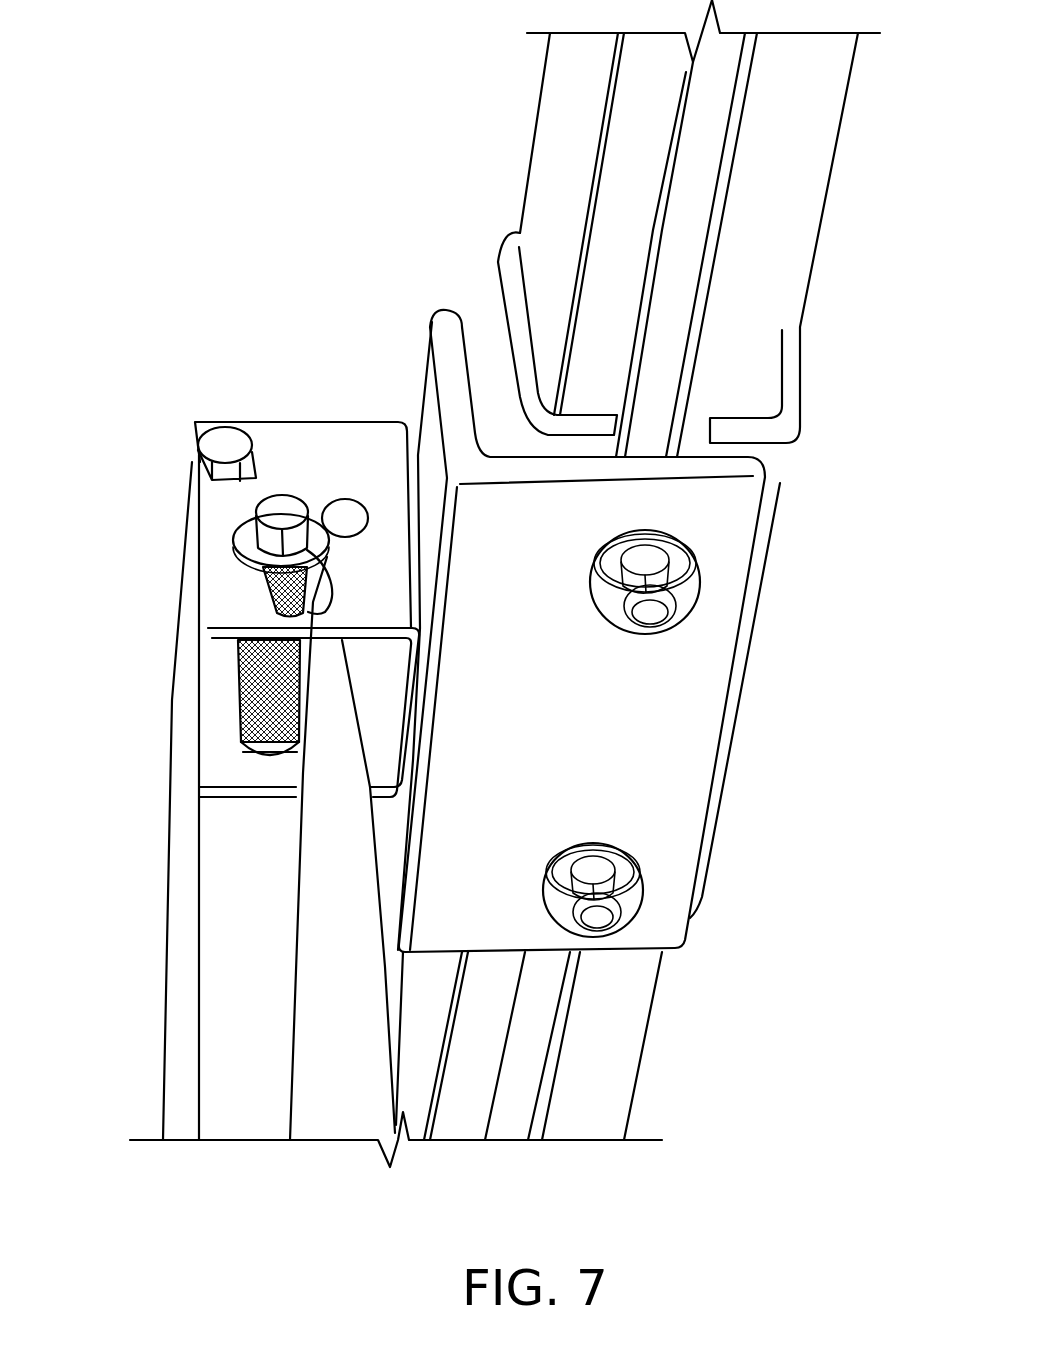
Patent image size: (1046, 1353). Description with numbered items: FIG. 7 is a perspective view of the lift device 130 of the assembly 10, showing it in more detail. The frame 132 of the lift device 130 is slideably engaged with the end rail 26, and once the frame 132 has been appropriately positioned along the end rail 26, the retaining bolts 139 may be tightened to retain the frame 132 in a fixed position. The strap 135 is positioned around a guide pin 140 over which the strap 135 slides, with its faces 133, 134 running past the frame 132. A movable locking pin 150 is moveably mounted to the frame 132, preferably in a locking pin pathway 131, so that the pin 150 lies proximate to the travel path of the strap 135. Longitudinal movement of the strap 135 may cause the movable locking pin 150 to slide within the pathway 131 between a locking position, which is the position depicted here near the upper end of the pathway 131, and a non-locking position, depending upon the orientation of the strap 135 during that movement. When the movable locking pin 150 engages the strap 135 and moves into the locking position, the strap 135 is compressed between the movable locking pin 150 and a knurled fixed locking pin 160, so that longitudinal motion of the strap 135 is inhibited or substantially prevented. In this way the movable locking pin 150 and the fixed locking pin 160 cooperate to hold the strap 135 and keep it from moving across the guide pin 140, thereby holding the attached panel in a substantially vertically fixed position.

The support assembly 10 is at (300, 149).
The end rail 26 is at (558, 127).
The lift device 130 is at (237, 561).
The locking pin pathway 131 is at (255, 750).
The frame 132 is at (315, 432).
The side face of post 133 is at (182, 1045).
The front face of post 134 is at (307, 1087).
The strap 135 is at (205, 828).
The retaining bolts 139 is at (650, 622).
The guide pin 140 is at (213, 437).
The movable locking pin 150 is at (237, 668).
The knurled fixed locking pin 160 is at (350, 508).